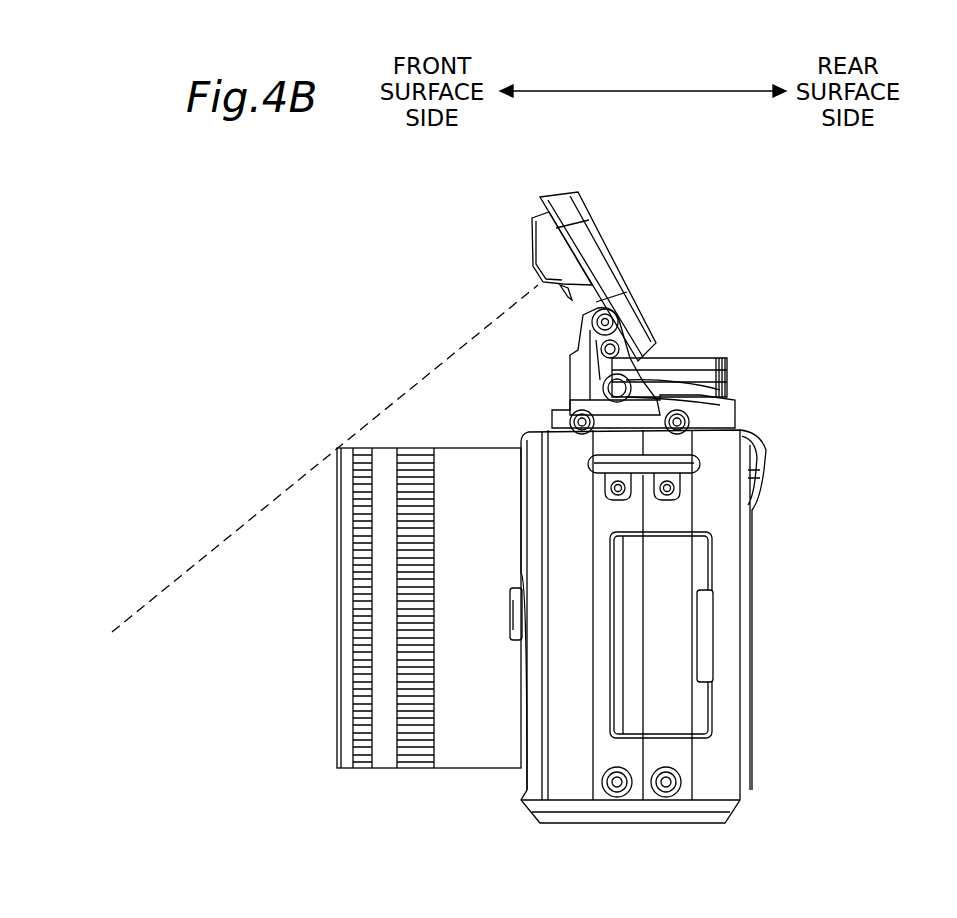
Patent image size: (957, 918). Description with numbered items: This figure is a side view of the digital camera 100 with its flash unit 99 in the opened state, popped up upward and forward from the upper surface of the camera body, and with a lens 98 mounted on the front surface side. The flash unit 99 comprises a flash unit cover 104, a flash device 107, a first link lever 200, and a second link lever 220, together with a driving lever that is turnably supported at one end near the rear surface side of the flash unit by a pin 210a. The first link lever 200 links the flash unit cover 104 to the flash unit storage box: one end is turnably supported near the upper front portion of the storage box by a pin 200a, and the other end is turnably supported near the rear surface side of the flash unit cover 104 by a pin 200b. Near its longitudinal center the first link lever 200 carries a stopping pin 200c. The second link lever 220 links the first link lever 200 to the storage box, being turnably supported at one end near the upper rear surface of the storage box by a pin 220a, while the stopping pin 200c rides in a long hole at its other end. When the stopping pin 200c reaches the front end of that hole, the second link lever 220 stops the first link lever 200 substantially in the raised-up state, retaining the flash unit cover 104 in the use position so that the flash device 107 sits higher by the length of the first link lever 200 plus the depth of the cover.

The lens 98 is at (462, 765).
The flash unit 99 is at (441, 165).
The digital camera 100 is at (778, 240).
The flash unit cover 104 is at (578, 215).
The flash device 107 is at (552, 246).
The first link lever 200 is at (590, 382).
The pin 200a is at (580, 420).
The pin 200b is at (606, 320).
The stopping pin 200c is at (622, 386).
The pin 210a is at (612, 348).
The second link lever 220 is at (632, 396).
The pin 220a is at (690, 424).